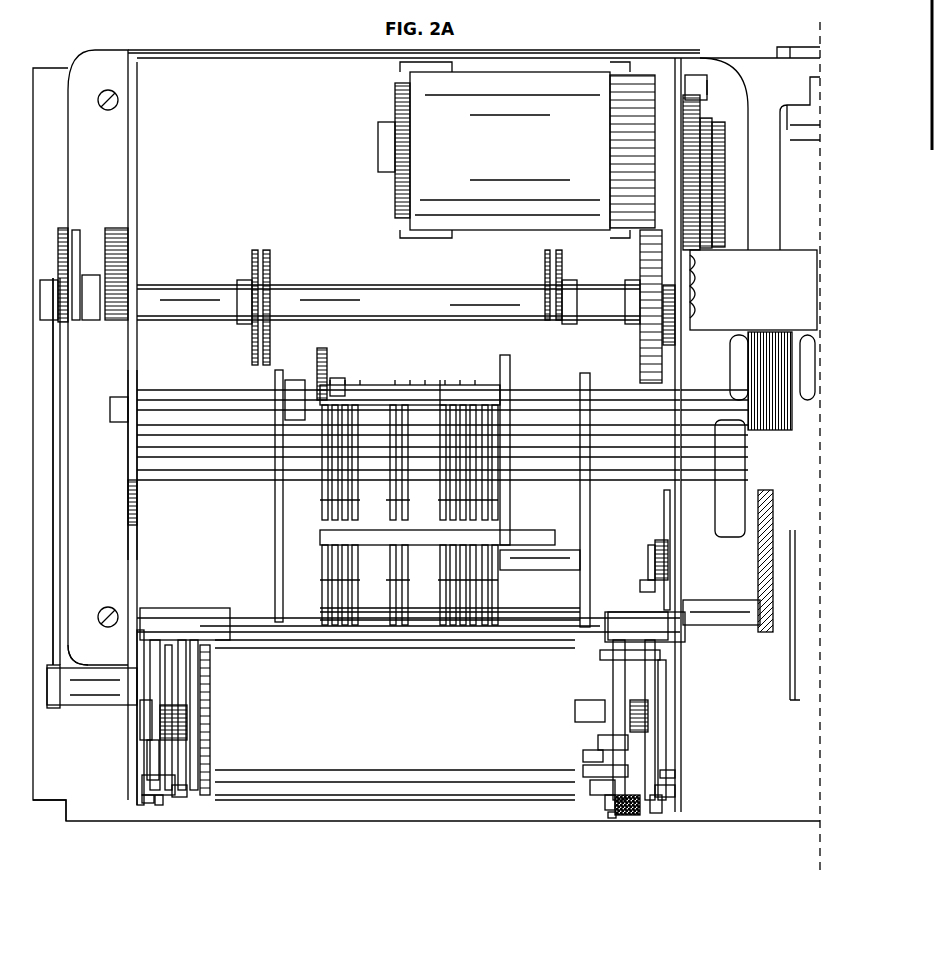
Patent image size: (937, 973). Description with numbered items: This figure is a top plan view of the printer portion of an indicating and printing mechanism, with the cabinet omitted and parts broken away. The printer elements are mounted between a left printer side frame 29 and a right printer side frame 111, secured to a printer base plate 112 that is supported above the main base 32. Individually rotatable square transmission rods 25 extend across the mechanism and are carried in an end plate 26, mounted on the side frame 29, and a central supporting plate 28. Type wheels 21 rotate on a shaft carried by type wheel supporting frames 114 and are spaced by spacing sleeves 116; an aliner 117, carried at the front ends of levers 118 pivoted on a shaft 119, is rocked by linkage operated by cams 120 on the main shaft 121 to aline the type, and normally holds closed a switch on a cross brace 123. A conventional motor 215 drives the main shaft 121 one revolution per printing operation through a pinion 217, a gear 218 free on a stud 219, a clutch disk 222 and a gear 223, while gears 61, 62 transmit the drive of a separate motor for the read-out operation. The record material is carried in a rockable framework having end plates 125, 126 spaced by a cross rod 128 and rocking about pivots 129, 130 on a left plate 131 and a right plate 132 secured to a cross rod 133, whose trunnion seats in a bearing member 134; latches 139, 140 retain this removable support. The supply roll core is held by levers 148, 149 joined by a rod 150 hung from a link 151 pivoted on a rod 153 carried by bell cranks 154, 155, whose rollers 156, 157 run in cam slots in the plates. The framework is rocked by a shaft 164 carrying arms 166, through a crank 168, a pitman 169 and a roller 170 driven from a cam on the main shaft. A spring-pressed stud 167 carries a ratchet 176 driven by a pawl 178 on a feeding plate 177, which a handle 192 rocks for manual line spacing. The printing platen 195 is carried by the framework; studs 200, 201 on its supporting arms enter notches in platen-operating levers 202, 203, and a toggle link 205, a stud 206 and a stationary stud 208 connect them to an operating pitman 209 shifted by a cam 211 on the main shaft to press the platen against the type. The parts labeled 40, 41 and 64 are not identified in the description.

The type wheels 21 is at (494, 614).
The square transmission rods 25 is at (187, 405).
The end plate 26 is at (128, 446).
The central supporting plate 28 is at (760, 520).
The left printer side frame 29 is at (138, 500).
The main base 32 is at (70, 810).
The type carriers 40 is at (442, 520).
The selector bar 41 is at (442, 390).
The gear 61 is at (760, 632).
The gear 62 is at (776, 630).
The worm 64 is at (758, 545).
The right printer side frame 111 is at (676, 514).
The printer base plate 112 is at (236, 62).
The type wheel supporting frames 114 is at (277, 530).
The spacing sleeves 116 is at (550, 570).
The aliner 117 is at (552, 536).
The levers 118 is at (318, 376).
The shaft 119 is at (372, 392).
The cams 120 is at (270, 264).
The main shaft 121 is at (178, 290).
The cross brace 123 is at (220, 608).
The end plate 125 is at (180, 798).
The end plate 126 is at (640, 815).
The cross rod 128 is at (586, 772).
The pivot 129 is at (142, 716).
The pivot 130 is at (655, 702).
The left plate 131 is at (158, 806).
The right plate 132 is at (657, 814).
The cross rod 133 is at (395, 729).
The cylindrical bearing member 134 is at (146, 802).
The latch 139 is at (144, 783).
The latch 140 is at (668, 791).
The lever 148 is at (200, 672).
The lever 149 is at (638, 623).
The rod 150 is at (208, 628).
The link 151 is at (190, 656).
The rod 153 is at (588, 690).
The bell crank 154 is at (196, 700).
The bell crank 155 is at (660, 740).
The roller 156 is at (150, 762).
The roller 157 is at (668, 773).
The shaft 164 is at (50, 705).
The arms 166 is at (204, 795).
The spring-pressed mounting stud 167 is at (586, 757).
The crank 168 is at (62, 668).
The pitman 169 is at (55, 528).
The roller 170 is at (62, 232).
The ratchet 176 is at (600, 742).
The feeding plate 177 is at (610, 810).
The driving pawl 178 is at (598, 794).
The handle 192 is at (612, 818).
The printing platen 195 is at (578, 710).
The stud 200 is at (186, 725).
The stud 201 is at (630, 722).
The platen-operating lever 202 is at (155, 652).
The platen-operating lever 203 is at (655, 655).
The toggle link 205 is at (650, 560).
The stud 206 is at (668, 558).
The stationary stud 208 is at (660, 586).
The operating pitman 209 is at (665, 502).
The cam 211 is at (640, 342).
The motor 215 is at (474, 216).
The pinion 217 is at (722, 128).
The gear 218 is at (722, 212).
The stud 219 is at (722, 182).
The clutch disk 222 is at (700, 118).
The gear 223 is at (692, 152).